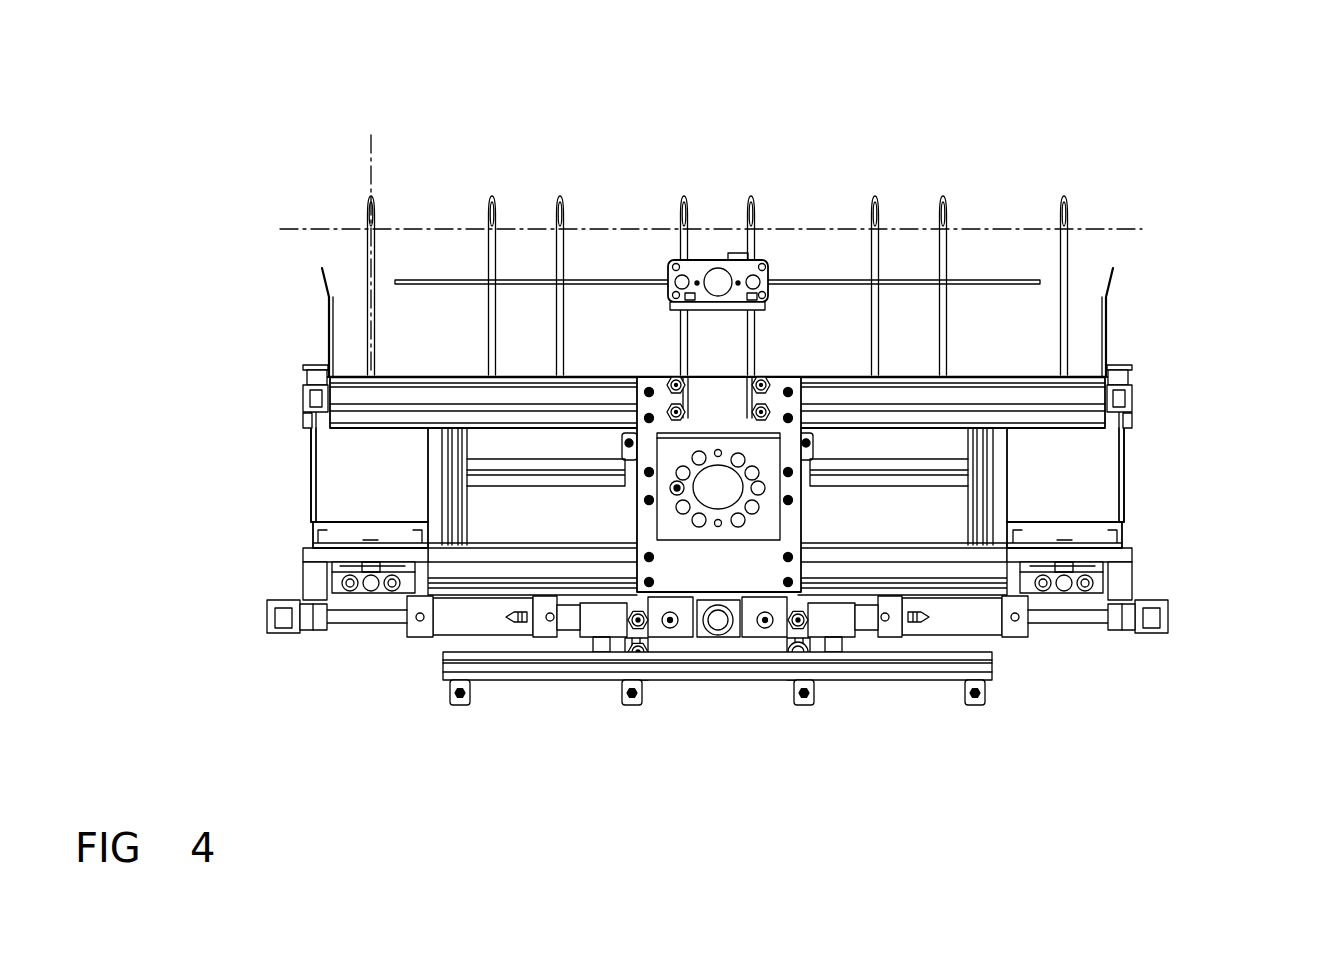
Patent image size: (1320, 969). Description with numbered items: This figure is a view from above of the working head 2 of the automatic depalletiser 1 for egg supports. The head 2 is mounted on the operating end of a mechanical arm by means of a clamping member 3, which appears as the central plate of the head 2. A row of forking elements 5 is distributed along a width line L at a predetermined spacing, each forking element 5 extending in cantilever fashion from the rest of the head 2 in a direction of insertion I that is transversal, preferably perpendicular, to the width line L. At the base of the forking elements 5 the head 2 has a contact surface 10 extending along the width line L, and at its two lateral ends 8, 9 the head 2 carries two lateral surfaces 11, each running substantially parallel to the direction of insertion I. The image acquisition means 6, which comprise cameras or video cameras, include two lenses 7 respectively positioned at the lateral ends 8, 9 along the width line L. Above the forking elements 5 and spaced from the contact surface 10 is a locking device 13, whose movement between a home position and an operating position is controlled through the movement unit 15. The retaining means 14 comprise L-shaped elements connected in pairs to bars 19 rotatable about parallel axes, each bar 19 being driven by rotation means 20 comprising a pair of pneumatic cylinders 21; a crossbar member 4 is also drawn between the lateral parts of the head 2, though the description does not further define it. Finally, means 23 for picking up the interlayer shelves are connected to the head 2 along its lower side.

The depalletiser 1 is at (177, 178).
The working head 2 is at (698, 376).
The clamping member 3 is at (738, 530).
The crossbar 4 is at (440, 470).
The forking elements 5 is at (565, 196).
The image acquisition means 6 is at (313, 507).
The lenses 7 is at (376, 470).
The lateral end 8 is at (1178, 457).
The lateral end 9 is at (275, 580).
The contact surface 10 is at (466, 375).
The lateral surfaces 11 is at (323, 317).
The locking device 13 is at (825, 282).
The retaining means 14 is at (300, 394).
The movement unit 15 is at (784, 258).
The bars 19 is at (313, 448).
The rotation means 20 is at (403, 652).
The pneumatic cylinders 21 is at (465, 617).
The means for picking up the interlayer shelves 23 is at (612, 712).
The direction of insertion I is at (371, 147).
The width line L is at (332, 229).